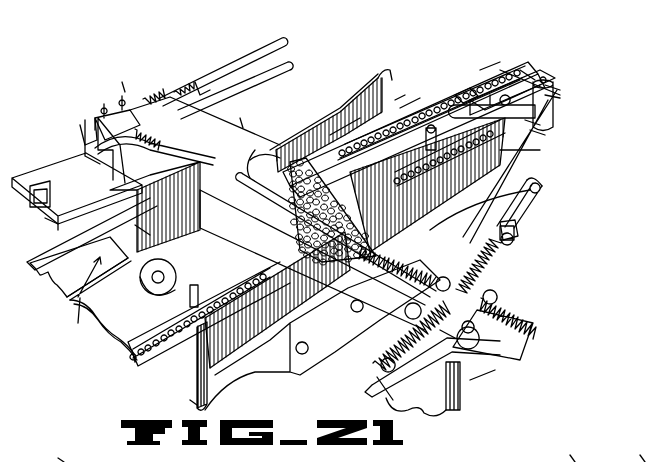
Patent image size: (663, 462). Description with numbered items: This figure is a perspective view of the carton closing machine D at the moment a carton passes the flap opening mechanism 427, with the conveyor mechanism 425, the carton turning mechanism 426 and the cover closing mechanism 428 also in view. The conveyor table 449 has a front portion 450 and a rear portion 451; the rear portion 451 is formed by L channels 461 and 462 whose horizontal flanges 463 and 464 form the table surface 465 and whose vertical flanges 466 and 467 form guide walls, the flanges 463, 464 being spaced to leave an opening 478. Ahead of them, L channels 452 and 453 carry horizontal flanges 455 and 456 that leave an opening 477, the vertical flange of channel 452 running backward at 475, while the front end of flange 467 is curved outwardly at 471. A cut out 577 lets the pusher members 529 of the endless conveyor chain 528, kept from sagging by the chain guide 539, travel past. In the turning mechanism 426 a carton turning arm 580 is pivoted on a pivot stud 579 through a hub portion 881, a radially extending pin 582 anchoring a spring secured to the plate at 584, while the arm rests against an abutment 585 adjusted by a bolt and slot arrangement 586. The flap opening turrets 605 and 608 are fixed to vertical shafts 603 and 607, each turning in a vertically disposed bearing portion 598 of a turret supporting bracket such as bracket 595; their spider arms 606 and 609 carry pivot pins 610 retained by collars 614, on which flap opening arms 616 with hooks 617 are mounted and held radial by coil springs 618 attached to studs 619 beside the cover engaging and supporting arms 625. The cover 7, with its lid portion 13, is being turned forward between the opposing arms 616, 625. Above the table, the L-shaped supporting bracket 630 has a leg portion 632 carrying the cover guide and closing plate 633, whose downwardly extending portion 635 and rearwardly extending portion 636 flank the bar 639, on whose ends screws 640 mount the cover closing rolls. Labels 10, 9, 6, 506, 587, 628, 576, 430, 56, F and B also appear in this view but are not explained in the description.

The conveyor rail 10 is at (345, 148).
The horizontal flange 455 is at (455, 75).
The chain link 506 is at (470, 88).
The L channel 452 is at (410, 100).
The conveyor mechanism 425 is at (490, 65).
The L channel 453 is at (520, 70).
The backwardly extending portion of vertical flange 475 is at (360, 110).
The L channel 461 is at (316, 132).
The opening 477 is at (388, 72).
The wall flange 587 is at (345, 122).
The carton turning arm 580 is at (600, 104).
The L channel 462 is at (448, 235).
The abutment 585 is at (492, 104).
The cut out 577 is at (540, 118).
The pusher members 529 is at (194, 283).
The bead region 9 is at (274, 252).
The plate 6 is at (241, 237).
The lid portion of the cover 13 is at (220, 164).
The cover 7 is at (352, 300).
The table surface 465 is at (280, 150).
The direction F is at (240, 128).
The flap opening arm 616 is at (430, 355).
The hook 617 is at (545, 185).
The bracket 628 is at (200, 80).
The vertical shaft 607 is at (140, 100).
The spider arms 609 is at (100, 110).
The turret 608 is at (82, 132).
The carton closing machine D is at (122, 82).
The cover engaging and supporting arm 625 is at (400, 380).
The vertical flange 466 is at (178, 232).
The vertically disposed downwardly extending portion 635 is at (108, 217).
The screws 640 is at (134, 239).
The supporting bracket 630 is at (38, 180).
The leg portion 632 is at (52, 226).
The bar 639 is at (100, 238).
The horizontally disposed rearwardly extending portion 636 is at (70, 281).
The cover guide and closing plate 633 is at (62, 294).
The opening 478 is at (120, 340).
The rear portion of the conveyor table 451 is at (117, 303).
The cover closing mechanism 428 is at (78, 323).
The horizontal flange 463 is at (147, 360).
The endless conveyor chain 528 is at (200, 272).
The horizontal flange 464 is at (197, 372).
The chain guide 539 is at (190, 395).
The vertical flange 467 is at (258, 330).
The conveyor table 449 is at (310, 355).
The vertically disposed bearing portion 598 is at (447, 422).
The pivot pins 610 is at (515, 235).
The retaining collar 614 is at (385, 400).
The coil spring 618 is at (540, 325).
The outwardly curved front end of vertical flange 471 is at (545, 162).
The flap opening mechanism 427 is at (530, 222).
The spider arms 606 is at (440, 373).
The turret 605 is at (470, 276).
The stud 619 is at (470, 285).
The vertically disposed shaft 603 is at (540, 325).
The turret supporting bracket 595 is at (563, 317).
The carton turning mechanism 426 is at (560, 106).
The pivot stud 579 is at (560, 88).
The bolt 881 is at (560, 97).
The spring attachment point on plate 584 is at (560, 80).
The front portion of the conveyor table 450 is at (530, 75).
The horizontal flange 456 is at (540, 80).
The radially extending pin 582 is at (545, 122).
The bolt and slot arrangement 586 is at (548, 134).
The bracket 576 is at (540, 148).
The support 430 is at (575, 451).
The frame 56 is at (645, 451).
The direction B is at (63, 455).